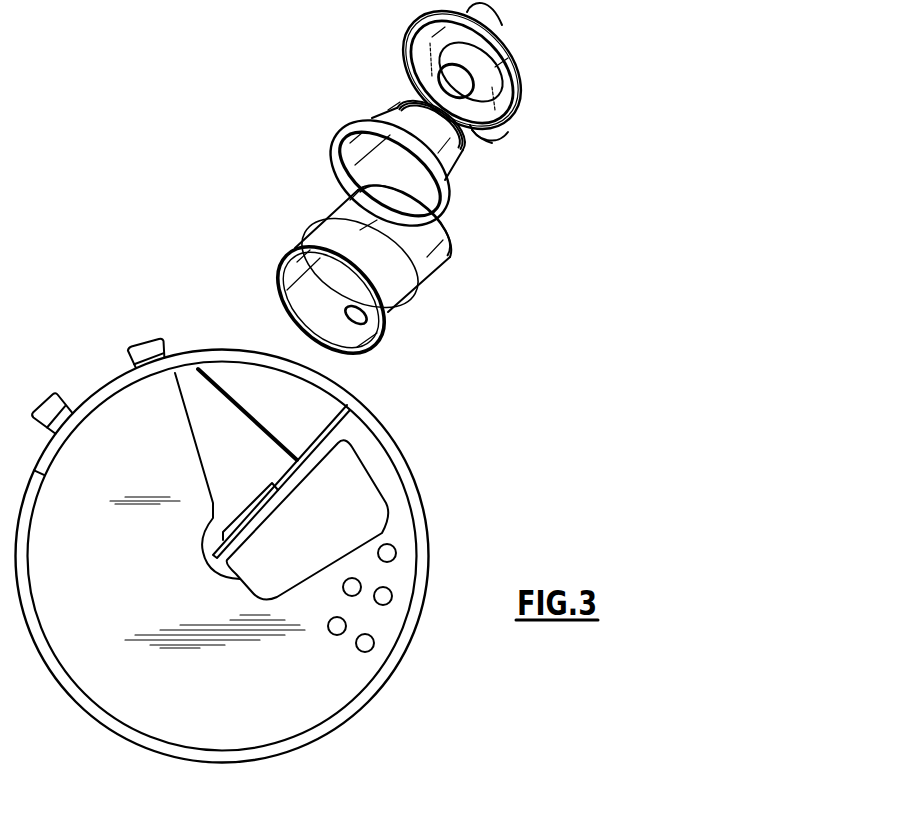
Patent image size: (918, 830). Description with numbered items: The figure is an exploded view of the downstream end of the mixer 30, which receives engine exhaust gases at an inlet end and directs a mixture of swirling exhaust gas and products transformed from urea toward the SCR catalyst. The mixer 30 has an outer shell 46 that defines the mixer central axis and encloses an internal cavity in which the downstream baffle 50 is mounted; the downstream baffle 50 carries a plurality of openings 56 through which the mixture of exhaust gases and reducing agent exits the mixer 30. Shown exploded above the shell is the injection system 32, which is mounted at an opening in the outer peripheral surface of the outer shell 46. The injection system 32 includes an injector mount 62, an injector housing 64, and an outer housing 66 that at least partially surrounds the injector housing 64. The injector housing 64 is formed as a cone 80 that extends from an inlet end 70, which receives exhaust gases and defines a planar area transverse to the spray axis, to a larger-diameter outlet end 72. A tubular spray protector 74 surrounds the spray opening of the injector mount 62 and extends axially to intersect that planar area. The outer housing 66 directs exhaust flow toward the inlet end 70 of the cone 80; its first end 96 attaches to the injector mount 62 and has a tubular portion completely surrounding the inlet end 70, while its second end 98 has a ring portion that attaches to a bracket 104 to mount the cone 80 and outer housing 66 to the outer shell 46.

The mixer 30 is at (462, 417).
The injection system 32 is at (572, 162).
The outer shell 46 is at (387, 689).
The downstream baffle 50 is at (120, 648).
The openings 56 is at (352, 508).
The injector mount 62 is at (509, 43).
The injector housing 64 is at (449, 172).
The outer housing 66 is at (425, 312).
The inlet end 70 is at (480, 143).
The outlet end 72 is at (334, 172).
The spray protector 74 is at (467, 84).
The cone 80 is at (400, 118).
The first end 96 is at (452, 259).
The second end 98 is at (282, 295).
The bracket 104 is at (342, 427).